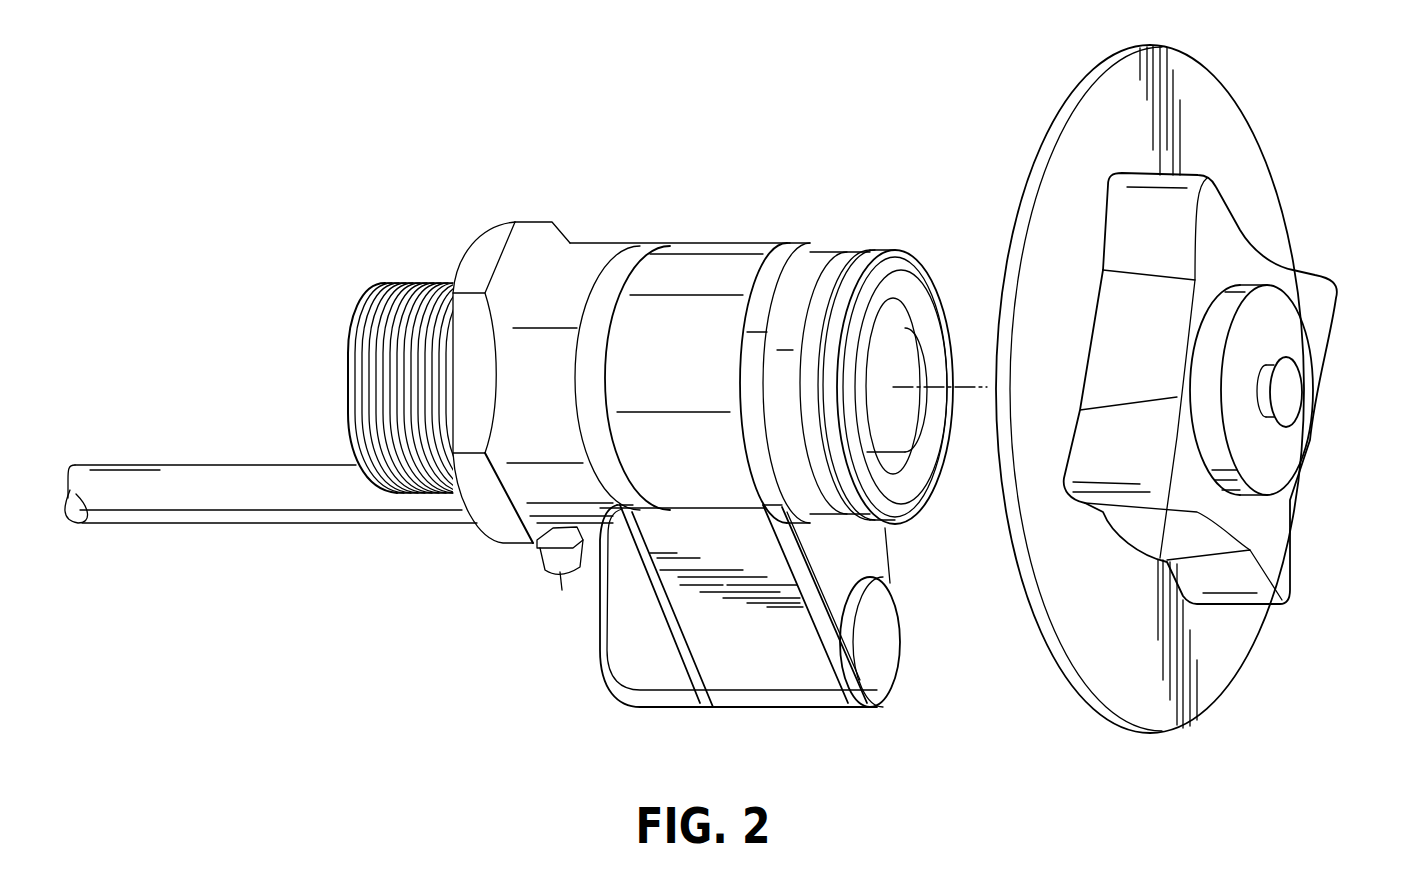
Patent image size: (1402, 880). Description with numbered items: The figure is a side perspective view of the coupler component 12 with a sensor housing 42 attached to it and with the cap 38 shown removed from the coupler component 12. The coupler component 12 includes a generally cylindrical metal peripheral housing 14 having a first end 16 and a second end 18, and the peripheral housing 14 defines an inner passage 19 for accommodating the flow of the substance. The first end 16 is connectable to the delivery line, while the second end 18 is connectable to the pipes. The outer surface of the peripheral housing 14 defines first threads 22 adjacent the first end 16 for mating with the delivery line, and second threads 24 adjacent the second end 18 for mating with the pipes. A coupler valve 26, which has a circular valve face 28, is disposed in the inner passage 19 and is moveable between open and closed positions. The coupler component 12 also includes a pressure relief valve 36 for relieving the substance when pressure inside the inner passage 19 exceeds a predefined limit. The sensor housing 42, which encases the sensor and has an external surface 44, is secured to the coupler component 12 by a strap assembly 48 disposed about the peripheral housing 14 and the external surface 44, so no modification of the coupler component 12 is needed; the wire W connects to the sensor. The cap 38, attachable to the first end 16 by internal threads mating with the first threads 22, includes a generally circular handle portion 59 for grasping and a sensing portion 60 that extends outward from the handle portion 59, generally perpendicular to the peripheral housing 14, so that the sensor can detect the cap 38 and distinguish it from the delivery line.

The coupler component 12 is at (631, 446).
The peripheral housing 14 is at (826, 245).
The first end 16 is at (889, 248).
The second end 18 is at (390, 283).
The inner passage 19 is at (429, 375).
The first threads 22 is at (868, 513).
The second threads 24 is at (407, 283).
The coupler valve 26 is at (927, 333).
The valve face 28 is at (895, 430).
The pressure relief valve 36 is at (563, 570).
The cap 38 is at (1196, 410).
The sensor housing 42 is at (653, 683).
The external surface 44 is at (820, 648).
The strap assembly 48 is at (718, 225).
The handle portion 59 is at (1280, 523).
The sensing portion 60 is at (1100, 680).
The wire W is at (252, 502).